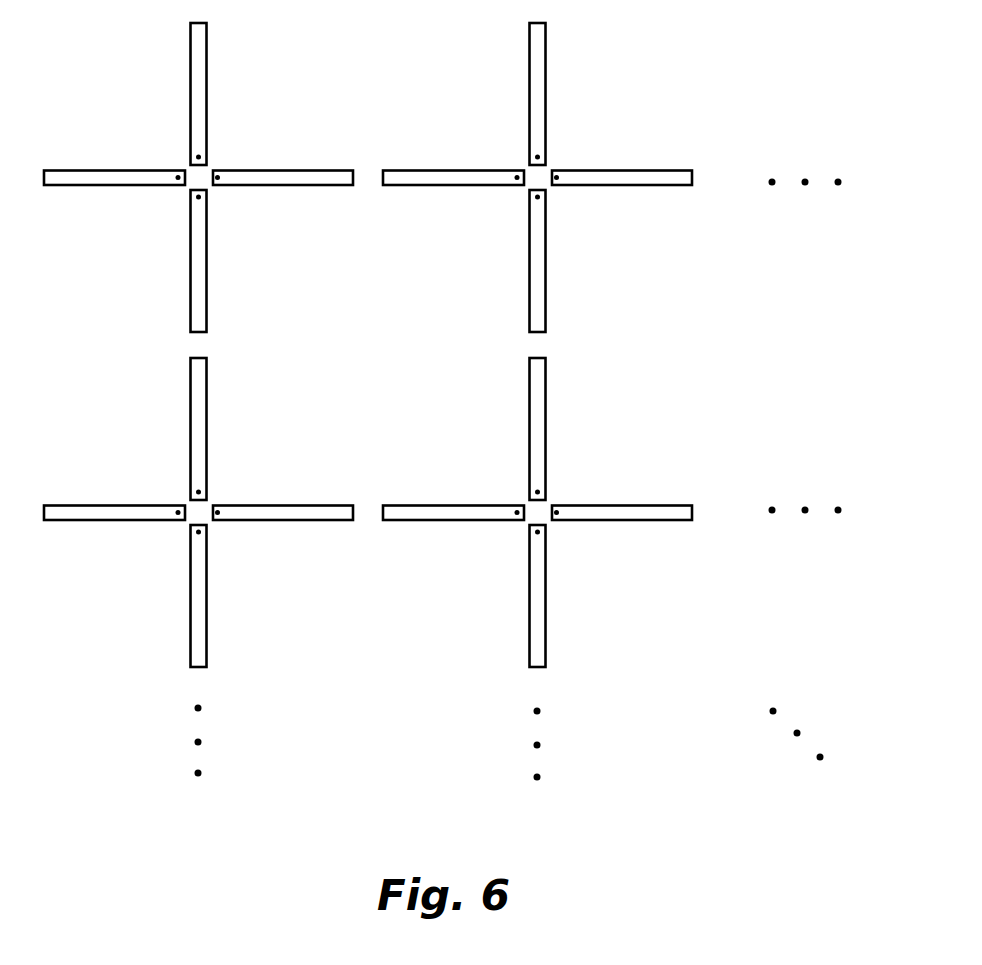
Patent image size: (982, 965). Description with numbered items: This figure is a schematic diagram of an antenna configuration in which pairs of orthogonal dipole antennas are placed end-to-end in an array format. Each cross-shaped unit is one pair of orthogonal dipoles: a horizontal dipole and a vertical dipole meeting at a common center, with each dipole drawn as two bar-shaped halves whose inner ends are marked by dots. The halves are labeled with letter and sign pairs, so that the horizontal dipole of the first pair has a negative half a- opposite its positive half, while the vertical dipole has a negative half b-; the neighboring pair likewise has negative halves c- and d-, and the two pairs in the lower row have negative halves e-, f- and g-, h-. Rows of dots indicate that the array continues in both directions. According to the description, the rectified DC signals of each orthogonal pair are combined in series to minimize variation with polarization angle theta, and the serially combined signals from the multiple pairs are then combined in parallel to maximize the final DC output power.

The electrode a negative a- is at (283, 177).
The electrode b negative b- is at (200, 261).
The electrode c negative c- is at (622, 177).
The electrode d negative d- is at (539, 261).
The electrode e negative e- is at (283, 512).
The electrode f negative f- is at (199, 596).
The electrode g negative g- is at (622, 512).
The electrode h negative h- is at (539, 596).